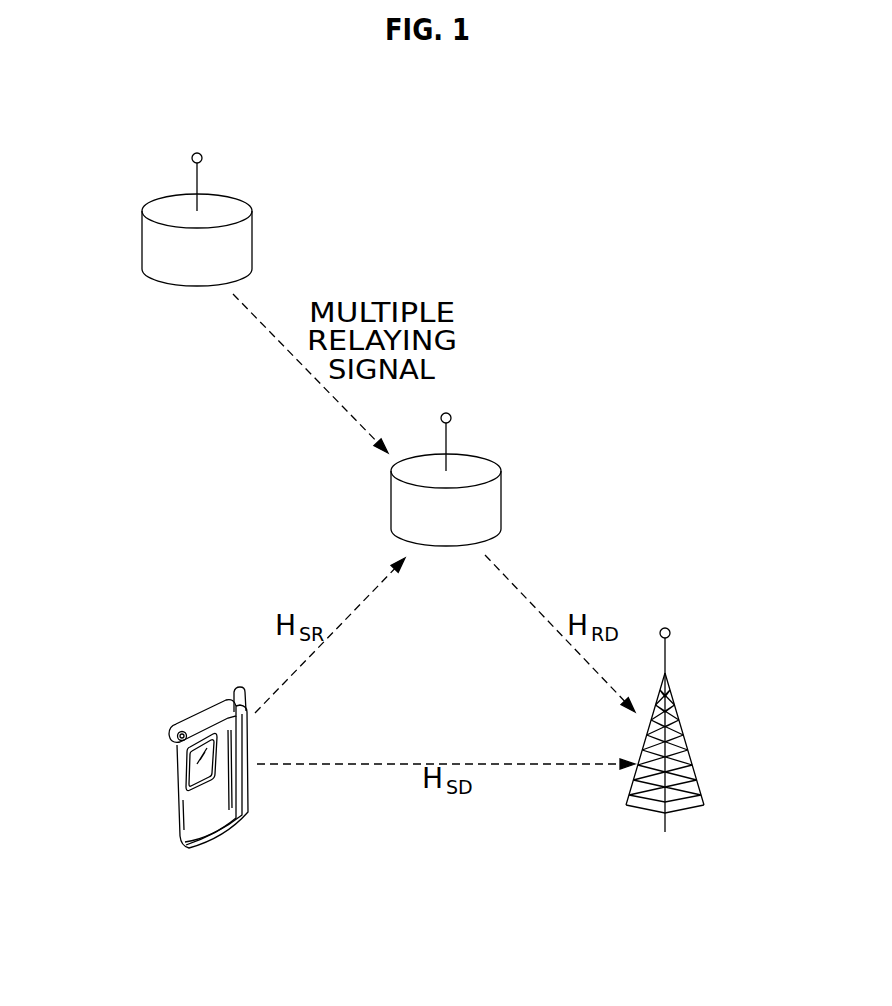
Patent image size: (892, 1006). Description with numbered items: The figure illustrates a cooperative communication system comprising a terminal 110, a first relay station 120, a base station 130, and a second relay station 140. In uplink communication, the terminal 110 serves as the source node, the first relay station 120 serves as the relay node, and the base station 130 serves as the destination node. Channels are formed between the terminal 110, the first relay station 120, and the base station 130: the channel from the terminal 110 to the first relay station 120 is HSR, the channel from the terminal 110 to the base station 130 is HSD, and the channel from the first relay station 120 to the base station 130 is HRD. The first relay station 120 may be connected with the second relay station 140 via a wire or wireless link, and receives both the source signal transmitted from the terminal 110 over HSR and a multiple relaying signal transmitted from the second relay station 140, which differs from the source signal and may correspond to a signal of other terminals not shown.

The terminal 110 is at (184, 789).
The relay station (1) 120 is at (501, 497).
The base station 130 is at (680, 757).
The relay station (2) 140 is at (252, 237).